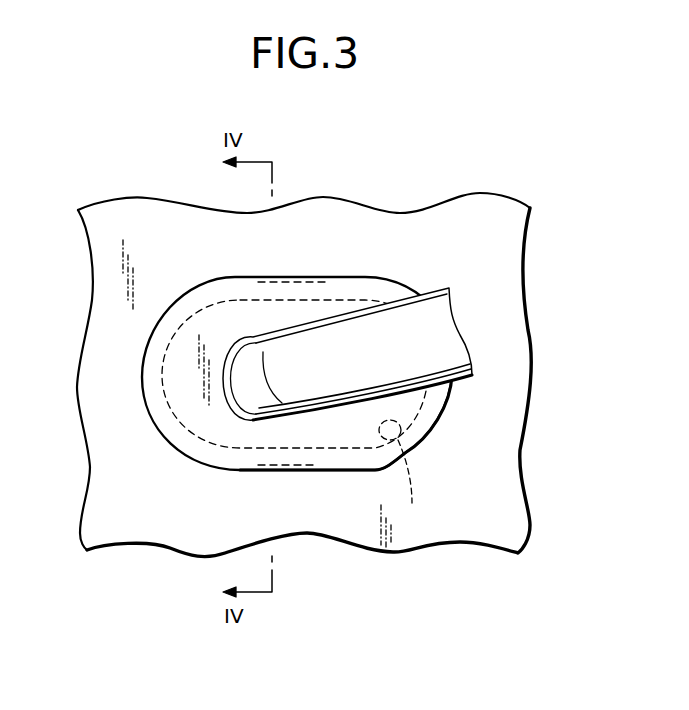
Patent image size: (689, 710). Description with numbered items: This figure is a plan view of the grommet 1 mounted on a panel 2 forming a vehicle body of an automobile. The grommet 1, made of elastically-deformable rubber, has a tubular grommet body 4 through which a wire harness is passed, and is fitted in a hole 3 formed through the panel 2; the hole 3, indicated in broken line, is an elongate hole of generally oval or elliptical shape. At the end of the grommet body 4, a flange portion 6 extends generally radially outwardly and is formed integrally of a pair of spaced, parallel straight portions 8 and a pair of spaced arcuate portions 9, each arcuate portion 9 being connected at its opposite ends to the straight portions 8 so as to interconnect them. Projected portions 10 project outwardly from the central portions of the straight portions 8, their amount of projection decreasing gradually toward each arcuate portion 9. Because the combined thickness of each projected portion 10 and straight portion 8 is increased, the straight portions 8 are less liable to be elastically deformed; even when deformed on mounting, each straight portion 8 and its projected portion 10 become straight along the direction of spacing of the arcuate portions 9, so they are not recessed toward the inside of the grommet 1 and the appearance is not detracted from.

The grommet 1 is at (292, 392).
The panel 2 is at (503, 489).
The hole 3 is at (398, 474).
The grommet body 4 is at (426, 289).
The flange portion 6 is at (360, 277).
The straight portions 8 is at (305, 293).
The arcuate portions 9 is at (292, 403).
The projected portions 10 is at (290, 277).